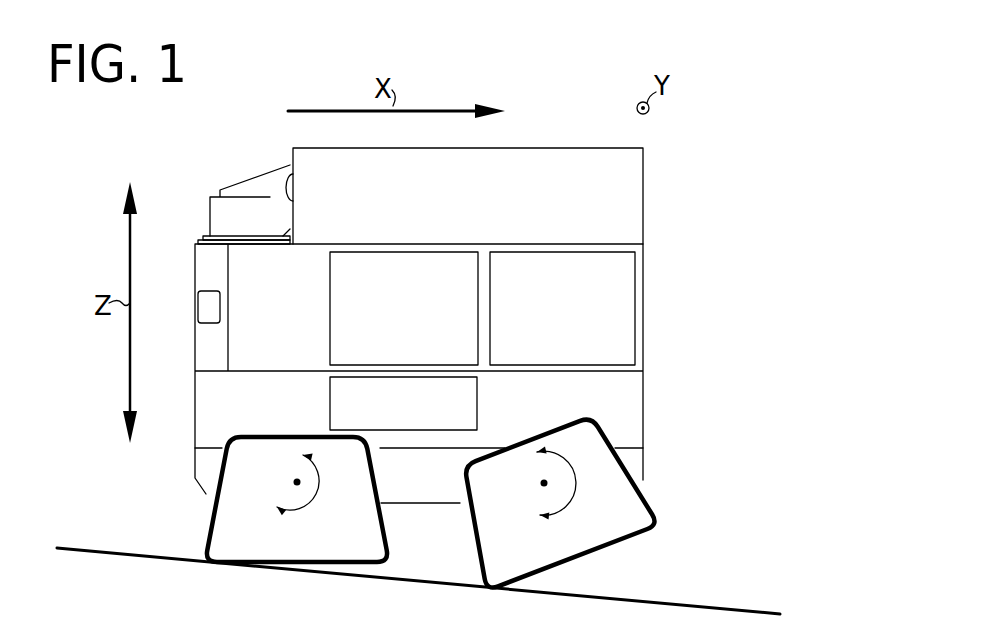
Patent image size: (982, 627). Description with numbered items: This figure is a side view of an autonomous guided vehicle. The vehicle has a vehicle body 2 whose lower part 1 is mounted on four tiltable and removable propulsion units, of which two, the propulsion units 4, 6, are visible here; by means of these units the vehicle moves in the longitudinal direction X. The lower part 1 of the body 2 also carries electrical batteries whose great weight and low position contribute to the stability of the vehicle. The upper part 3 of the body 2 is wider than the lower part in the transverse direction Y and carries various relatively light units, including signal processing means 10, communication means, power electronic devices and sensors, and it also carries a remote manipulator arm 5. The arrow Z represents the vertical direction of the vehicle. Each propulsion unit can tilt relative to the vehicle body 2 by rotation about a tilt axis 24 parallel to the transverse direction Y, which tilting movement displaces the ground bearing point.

The lower part 1 is at (414, 475).
The vehicle body 2 is at (656, 340).
The upper part 3 is at (647, 256).
The propulsion unit 4 is at (610, 517).
The remote manipulator arm 5 is at (270, 183).
The propulsion unit 6 is at (218, 528).
The signal processing means 10 is at (423, 280).
The tilt axis 24 is at (540, 488).